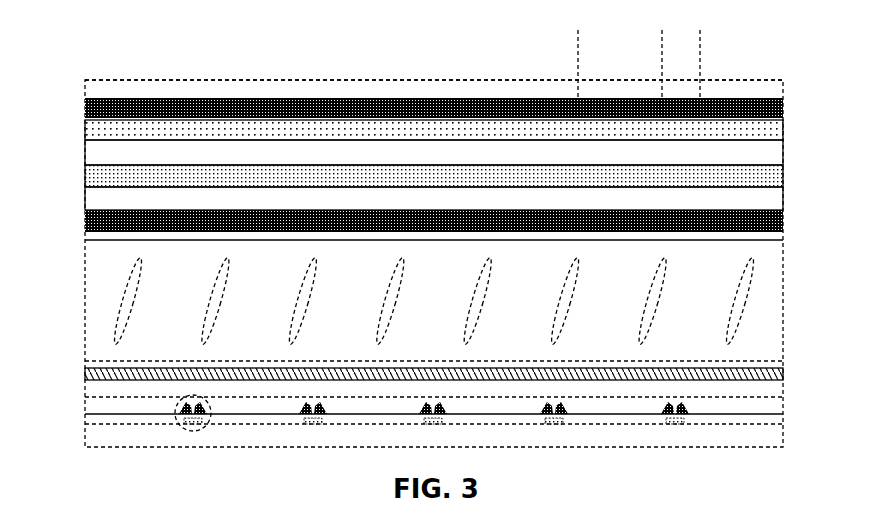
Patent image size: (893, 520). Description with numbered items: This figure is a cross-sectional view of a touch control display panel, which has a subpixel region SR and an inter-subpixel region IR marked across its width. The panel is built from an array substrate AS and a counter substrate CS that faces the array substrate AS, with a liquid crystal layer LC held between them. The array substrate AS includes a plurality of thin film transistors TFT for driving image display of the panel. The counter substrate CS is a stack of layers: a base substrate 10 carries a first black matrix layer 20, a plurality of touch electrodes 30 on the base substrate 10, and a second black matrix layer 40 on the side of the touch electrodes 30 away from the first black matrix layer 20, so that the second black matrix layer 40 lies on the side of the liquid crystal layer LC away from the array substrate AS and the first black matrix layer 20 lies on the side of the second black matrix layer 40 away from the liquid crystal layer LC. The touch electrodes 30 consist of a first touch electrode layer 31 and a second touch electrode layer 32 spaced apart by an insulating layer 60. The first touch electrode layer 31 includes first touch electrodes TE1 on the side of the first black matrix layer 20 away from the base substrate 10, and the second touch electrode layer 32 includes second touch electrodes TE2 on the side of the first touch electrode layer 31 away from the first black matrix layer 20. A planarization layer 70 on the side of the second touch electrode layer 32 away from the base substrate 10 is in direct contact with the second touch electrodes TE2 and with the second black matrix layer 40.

The base substrate 10 is at (775, 89).
The first black matrix layer 20 is at (783, 108).
The touch electrodes 30 is at (482, 164).
The first touch electrode layer 31 is at (459, 141).
The second touch electrode layer 32 is at (459, 187).
The second black matrix layer 40 is at (783, 220).
The insulating layer 60 is at (434, 152).
The planarization layer 70 is at (434, 197).
The first touch electrodes TE1 is at (317, 130).
The second touch electrodes TE2 is at (317, 176).
The thin film transistors TFT is at (209, 421).
The counter substrate CS is at (449, 160).
The liquid crystal layer LC is at (82, 242).
The array substrate AS is at (401, 406).
The subpixel region SR is at (578, 28).
The inter-subpixel region IR is at (662, 28).